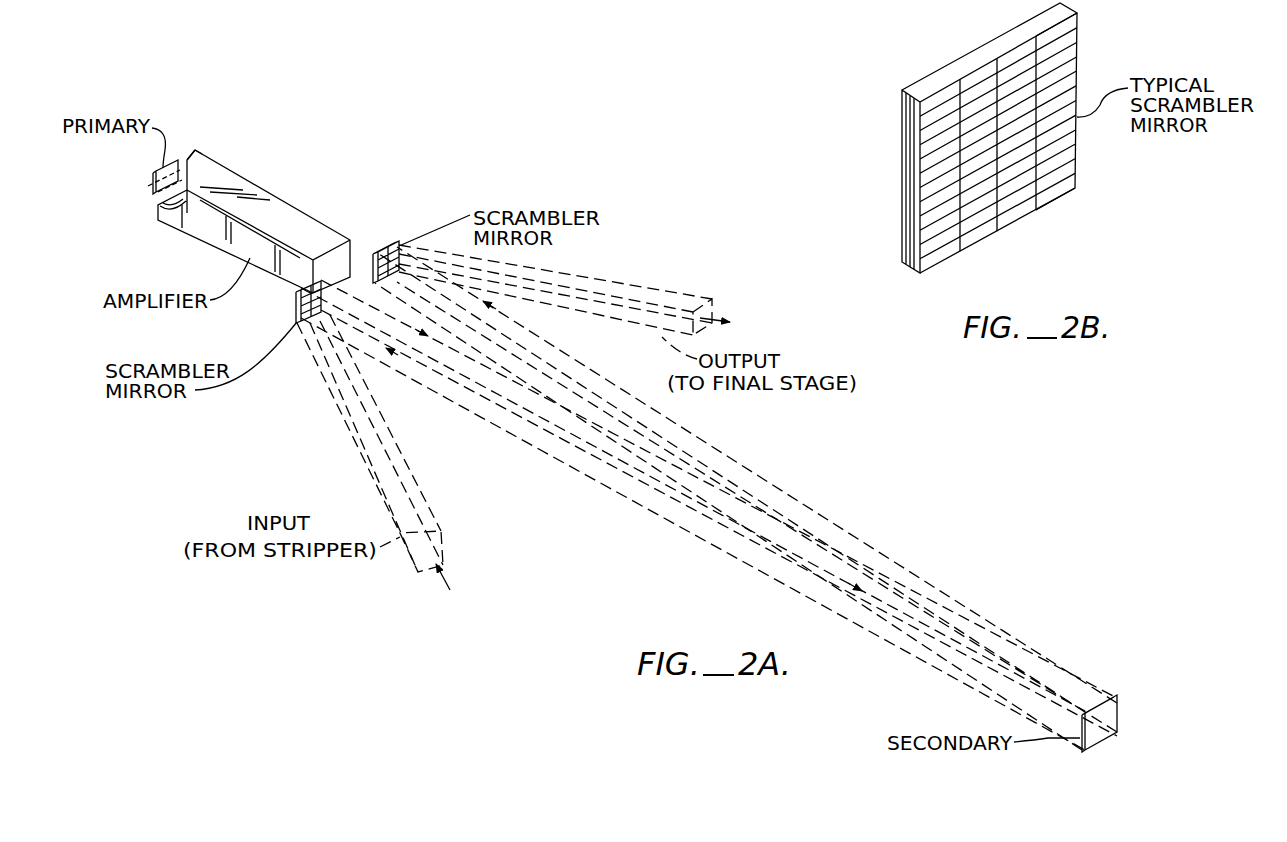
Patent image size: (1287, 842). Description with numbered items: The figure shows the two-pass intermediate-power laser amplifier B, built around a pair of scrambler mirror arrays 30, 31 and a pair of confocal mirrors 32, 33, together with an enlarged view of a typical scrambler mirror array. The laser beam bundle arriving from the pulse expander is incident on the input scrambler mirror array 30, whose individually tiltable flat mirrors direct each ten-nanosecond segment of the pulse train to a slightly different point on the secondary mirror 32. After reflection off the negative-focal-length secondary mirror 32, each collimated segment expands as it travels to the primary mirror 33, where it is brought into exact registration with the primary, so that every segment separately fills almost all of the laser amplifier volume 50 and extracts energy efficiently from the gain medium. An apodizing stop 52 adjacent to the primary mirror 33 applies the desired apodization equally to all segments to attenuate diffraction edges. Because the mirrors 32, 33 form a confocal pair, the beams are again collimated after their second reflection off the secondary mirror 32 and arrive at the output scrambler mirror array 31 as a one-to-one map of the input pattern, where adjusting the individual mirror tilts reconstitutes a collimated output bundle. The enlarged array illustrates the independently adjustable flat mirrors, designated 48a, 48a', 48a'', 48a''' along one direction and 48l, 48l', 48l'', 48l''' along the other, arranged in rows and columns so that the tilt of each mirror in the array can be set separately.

In FIG. 2A, the input scrambler mirror array 30 is at (295, 307).
In FIG. 2A, the output scrambler mirror array 31 is at (383, 247).
In FIG. 2B, the output scrambler mirror array 31 is at (896, 154).
In FIG. 2A, the secondary mirror 32 is at (1108, 709).
In FIG. 2A, the primary mirror 33 is at (156, 187).
In FIG. 2A, the laser amplifier volume 50 is at (357, 240).
In FIG. 2A, the apodizing stop 52 is at (189, 154).
In FIG. 2A, the two-pass intermediate-power laser amplifier B is at (212, 226).
In FIG. 2B, the scrambler mirror 48a is at (904, 165).
In FIG. 2B, the scrambler mirror 48a' is at (952, 133).
In FIG. 2B, the scrambler mirror 48a'' is at (999, 110).
In FIG. 2B, the scrambler mirror 48a''' is at (1095, 111).
In FIG. 2B, the scrambler mirror 48l is at (997, 234).
In FIG. 2B, the scrambler mirror 48l' is at (997, 217).
In FIG. 2B, the scrambler mirror 48l'' is at (997, 195).
In FIG. 2B, the scrambler mirror 48l''' is at (1026, 173).